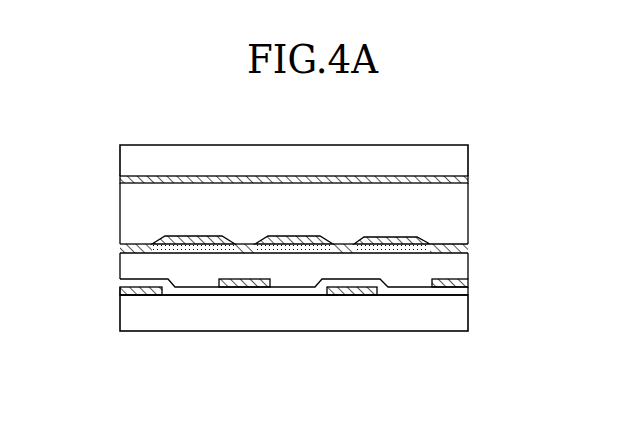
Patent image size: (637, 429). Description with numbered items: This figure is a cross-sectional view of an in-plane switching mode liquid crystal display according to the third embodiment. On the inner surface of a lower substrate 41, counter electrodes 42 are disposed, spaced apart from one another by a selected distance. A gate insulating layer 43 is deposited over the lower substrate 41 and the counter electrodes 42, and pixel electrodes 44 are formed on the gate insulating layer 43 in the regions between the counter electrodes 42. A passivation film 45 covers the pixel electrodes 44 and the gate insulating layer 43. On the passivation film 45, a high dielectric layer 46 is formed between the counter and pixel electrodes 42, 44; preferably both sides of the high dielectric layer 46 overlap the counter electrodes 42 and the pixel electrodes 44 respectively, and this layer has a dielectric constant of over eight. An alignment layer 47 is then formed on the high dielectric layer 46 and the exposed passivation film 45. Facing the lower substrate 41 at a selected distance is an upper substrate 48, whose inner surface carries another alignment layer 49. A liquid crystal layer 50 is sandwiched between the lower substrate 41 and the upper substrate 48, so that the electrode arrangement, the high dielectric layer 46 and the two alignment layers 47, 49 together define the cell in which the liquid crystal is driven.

The lower substrate 41 is at (458, 323).
The counter electrodes 42 is at (128, 292).
The gate insulating layer 43 is at (458, 292).
The pixel electrodes 44 is at (458, 281).
The passivation film 45 is at (128, 263).
The high dielectric layer 46 is at (420, 249).
The alignment layer 47 is at (408, 243).
The upper substrate 48 is at (458, 158).
The alignment layer 49 is at (458, 178).
The liquid crystal layer 50 is at (128, 213).